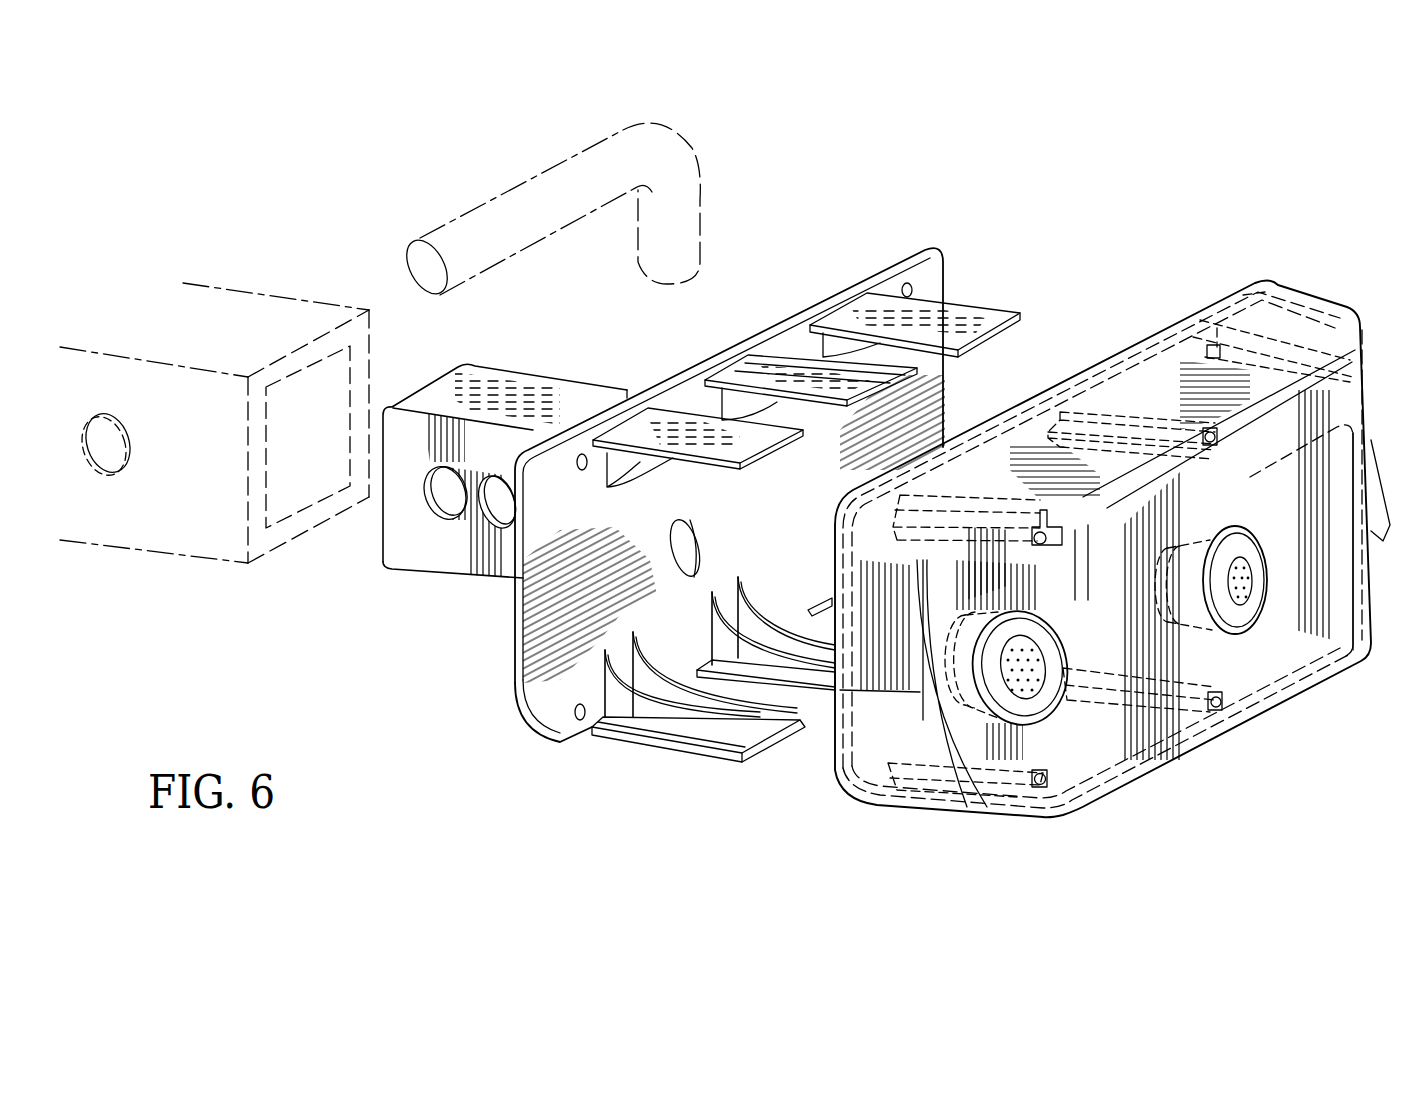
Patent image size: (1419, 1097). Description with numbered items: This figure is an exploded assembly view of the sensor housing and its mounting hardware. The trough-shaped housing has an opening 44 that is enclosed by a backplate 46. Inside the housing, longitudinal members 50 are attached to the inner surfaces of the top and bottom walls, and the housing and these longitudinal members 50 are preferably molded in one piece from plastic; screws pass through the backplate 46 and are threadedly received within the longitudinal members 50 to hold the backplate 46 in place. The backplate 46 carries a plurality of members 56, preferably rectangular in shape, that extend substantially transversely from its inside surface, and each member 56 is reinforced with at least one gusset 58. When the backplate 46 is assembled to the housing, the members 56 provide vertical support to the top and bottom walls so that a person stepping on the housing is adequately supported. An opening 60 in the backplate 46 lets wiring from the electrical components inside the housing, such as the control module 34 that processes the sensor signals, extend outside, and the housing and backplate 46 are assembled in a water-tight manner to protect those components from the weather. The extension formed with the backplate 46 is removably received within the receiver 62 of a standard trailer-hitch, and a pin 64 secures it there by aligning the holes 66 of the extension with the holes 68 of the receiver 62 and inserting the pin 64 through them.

The control module 34 is at (1325, 643).
The opening 44 is at (880, 735).
The backplate 46 is at (520, 649).
The longitudinal members 50 is at (963, 507).
The members 56 is at (670, 420).
The gusset 58 is at (610, 472).
The opening 60 is at (698, 540).
The receiver 62 is at (278, 297).
The pin 64 is at (483, 207).
The holes 66 is at (437, 513).
The holes 68 is at (117, 477).